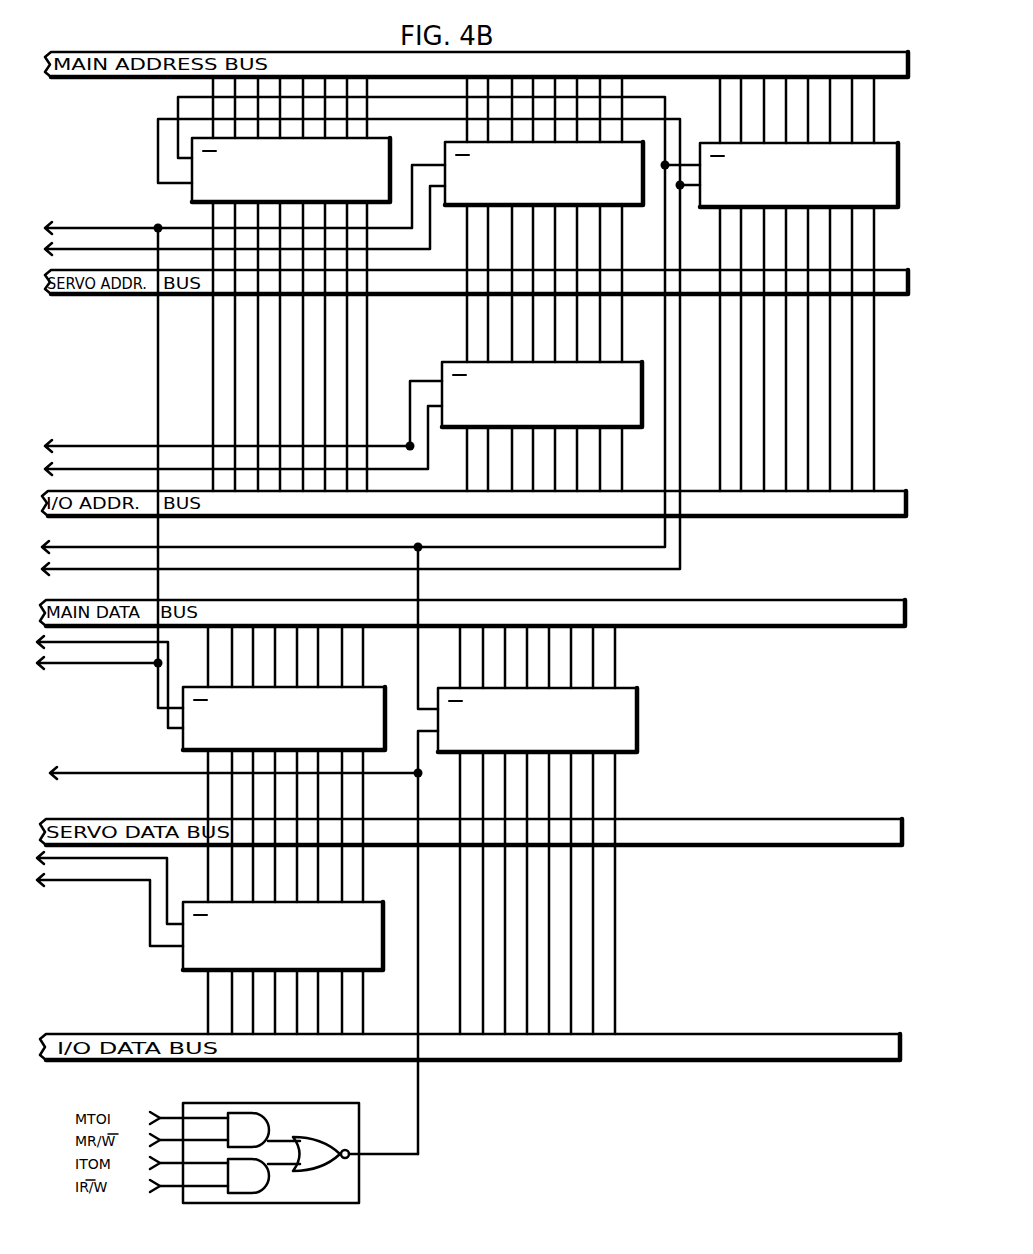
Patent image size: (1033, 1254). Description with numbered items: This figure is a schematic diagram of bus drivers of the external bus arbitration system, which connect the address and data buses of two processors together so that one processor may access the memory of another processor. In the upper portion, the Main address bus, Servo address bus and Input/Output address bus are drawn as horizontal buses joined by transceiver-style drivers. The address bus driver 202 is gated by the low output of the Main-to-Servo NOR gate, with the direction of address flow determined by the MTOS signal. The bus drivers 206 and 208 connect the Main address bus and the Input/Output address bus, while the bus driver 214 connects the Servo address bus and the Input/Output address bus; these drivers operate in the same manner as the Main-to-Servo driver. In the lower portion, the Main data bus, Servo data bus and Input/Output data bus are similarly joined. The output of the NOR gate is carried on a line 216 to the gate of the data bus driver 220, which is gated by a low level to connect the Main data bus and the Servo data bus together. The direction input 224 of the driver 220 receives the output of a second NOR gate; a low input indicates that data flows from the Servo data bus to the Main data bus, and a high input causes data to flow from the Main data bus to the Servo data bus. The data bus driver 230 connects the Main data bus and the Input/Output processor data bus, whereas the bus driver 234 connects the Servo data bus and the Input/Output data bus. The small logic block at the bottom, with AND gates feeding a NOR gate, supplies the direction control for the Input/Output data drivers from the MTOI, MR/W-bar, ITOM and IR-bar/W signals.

The address bus driver 202 is at (445, 153).
The bus driver 206 is at (191, 188).
The bus driver 208 is at (885, 190).
The bus driver 214 is at (440, 363).
The line 216 is at (156, 355).
The data bus driver 220 is at (376, 689).
The direction input 224 is at (180, 731).
The data bus driver 230 is at (625, 696).
The bus driver 234 is at (368, 914).